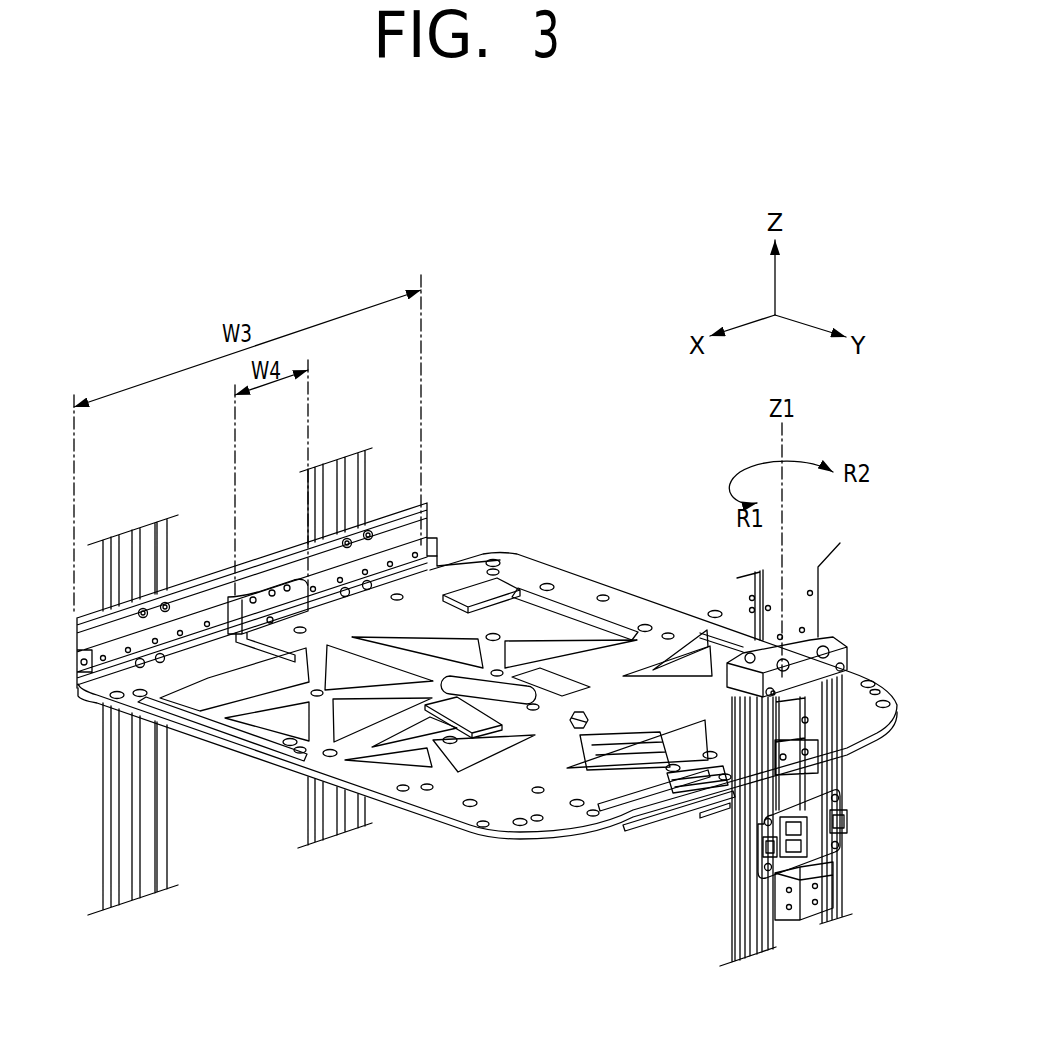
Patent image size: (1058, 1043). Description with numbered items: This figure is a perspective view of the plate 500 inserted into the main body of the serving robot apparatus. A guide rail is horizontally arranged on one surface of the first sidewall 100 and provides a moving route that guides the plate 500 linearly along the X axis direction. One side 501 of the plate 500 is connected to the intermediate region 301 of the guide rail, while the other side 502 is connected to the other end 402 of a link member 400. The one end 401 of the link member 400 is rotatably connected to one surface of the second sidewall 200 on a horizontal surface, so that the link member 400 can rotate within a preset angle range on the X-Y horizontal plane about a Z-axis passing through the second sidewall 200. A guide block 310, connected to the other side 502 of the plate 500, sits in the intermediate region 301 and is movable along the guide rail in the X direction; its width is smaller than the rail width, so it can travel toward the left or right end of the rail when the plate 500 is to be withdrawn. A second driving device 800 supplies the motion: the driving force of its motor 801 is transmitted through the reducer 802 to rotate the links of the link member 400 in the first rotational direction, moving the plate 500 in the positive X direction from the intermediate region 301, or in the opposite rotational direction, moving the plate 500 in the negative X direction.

The first sidewall 100 is at (146, 537).
The second sidewall 200 is at (810, 574).
The intermediate region 301 is at (275, 541).
The guide block 310 is at (267, 605).
The link member 400 is at (667, 792).
The one end 401 is at (722, 817).
The other end 402 is at (582, 710).
The plate 500 is at (560, 574).
The one side 501 is at (466, 560).
The other side 502 is at (868, 673).
The second driving device 800 is at (850, 802).
The motor 801 is at (823, 889).
The reducer 802 is at (808, 831).